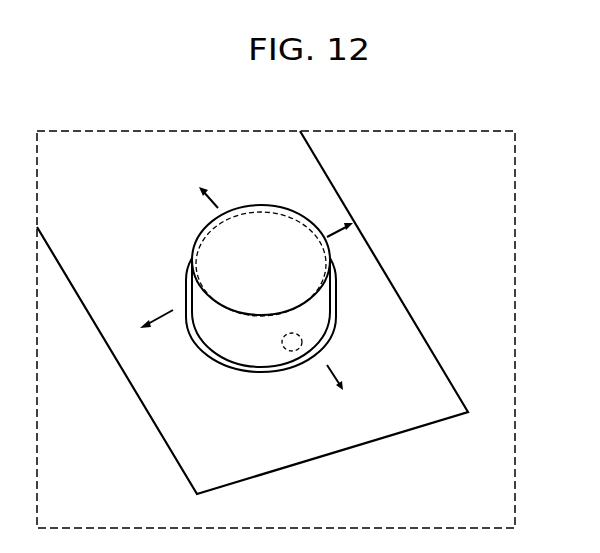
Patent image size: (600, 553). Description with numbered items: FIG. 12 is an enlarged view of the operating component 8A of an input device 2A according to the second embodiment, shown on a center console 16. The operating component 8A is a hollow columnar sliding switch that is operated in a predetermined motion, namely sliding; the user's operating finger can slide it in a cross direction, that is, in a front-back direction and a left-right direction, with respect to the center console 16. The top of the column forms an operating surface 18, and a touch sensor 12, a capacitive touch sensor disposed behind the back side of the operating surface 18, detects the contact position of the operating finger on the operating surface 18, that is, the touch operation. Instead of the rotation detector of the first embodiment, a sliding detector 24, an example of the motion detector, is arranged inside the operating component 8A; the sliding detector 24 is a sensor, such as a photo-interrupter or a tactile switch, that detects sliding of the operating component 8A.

The center console 16 is at (492, 340).
The input device 2A is at (372, 198).
The operating component 8A is at (317, 323).
The touch sensor 12 is at (213, 305).
The operating surface 18 is at (217, 247).
The sliding detector 24 is at (293, 352).